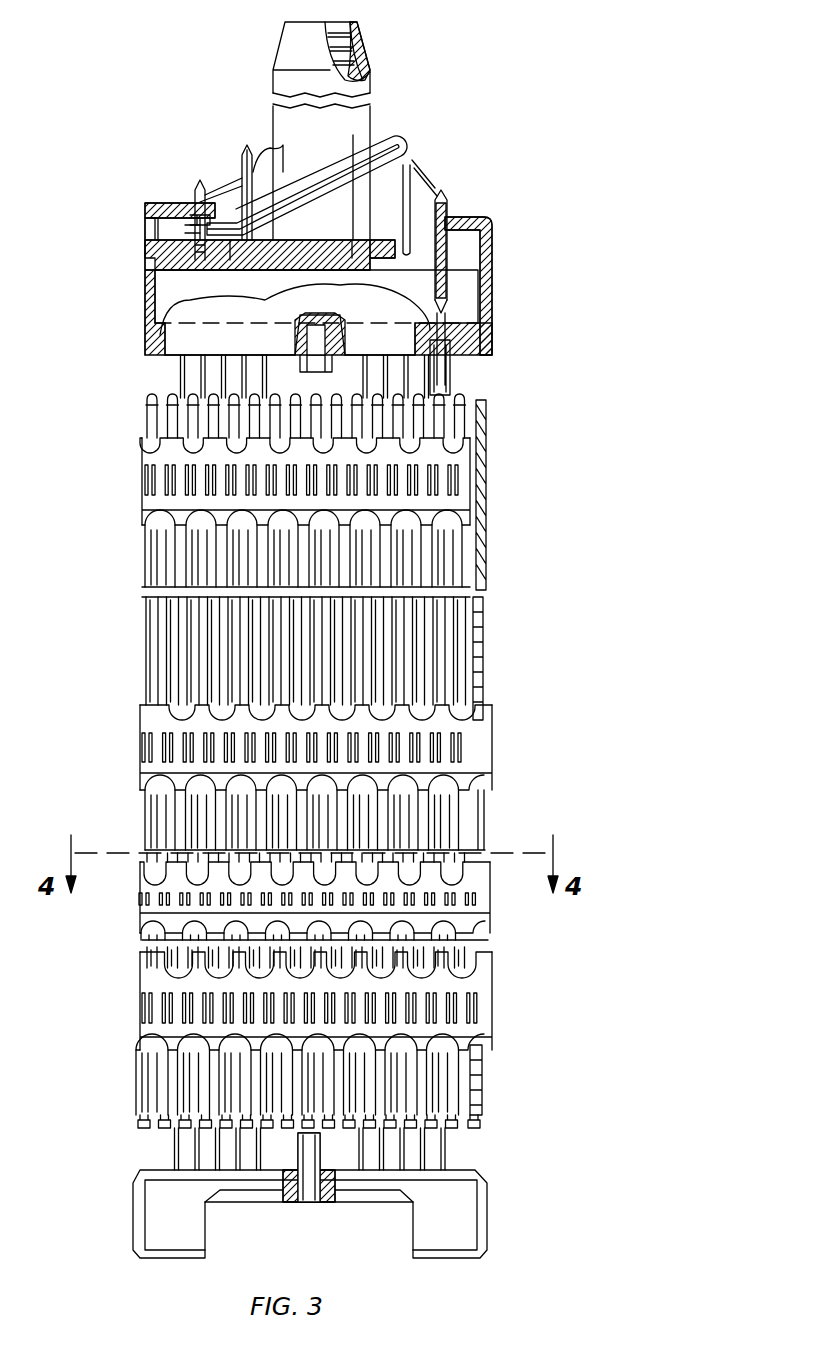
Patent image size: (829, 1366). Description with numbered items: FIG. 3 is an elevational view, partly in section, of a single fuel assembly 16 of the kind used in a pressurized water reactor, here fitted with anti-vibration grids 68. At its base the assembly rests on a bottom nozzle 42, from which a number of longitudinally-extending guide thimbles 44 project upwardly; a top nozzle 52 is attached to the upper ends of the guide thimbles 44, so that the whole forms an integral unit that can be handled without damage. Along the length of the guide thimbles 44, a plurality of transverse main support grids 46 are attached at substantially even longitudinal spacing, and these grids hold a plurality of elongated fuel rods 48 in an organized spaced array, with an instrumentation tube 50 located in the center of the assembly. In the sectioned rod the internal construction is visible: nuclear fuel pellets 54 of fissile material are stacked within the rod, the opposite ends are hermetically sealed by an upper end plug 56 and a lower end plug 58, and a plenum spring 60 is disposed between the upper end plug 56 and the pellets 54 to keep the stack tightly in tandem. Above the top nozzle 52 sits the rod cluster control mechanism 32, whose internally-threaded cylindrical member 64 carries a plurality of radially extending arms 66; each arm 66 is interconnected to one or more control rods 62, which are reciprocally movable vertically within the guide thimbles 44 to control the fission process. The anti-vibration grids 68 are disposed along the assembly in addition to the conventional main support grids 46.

The fuel assembly 16 is at (378, 245).
The rod cluster control mechanism 32 is at (428, 170).
The bottom nozzle 42 is at (487, 1216).
The guide thimbles 44 is at (200, 382).
The main support grids 46 is at (142, 476).
The fuel rods 48 is at (313, 783).
The instrumentation tube 50 is at (309, 1202).
The top nozzle 52 is at (495, 292).
The nuclear fuel pellets 54 is at (486, 665).
The upper end plug 56 is at (150, 410).
The lower end plug 58 is at (145, 1120).
The plenum spring 60 is at (488, 472).
The control rods 62 is at (445, 326).
The internally-threaded cylindrical member 64 is at (372, 107).
The radially extending arms 66 is at (222, 198).
The anti-vibration grids 68 is at (486, 905).